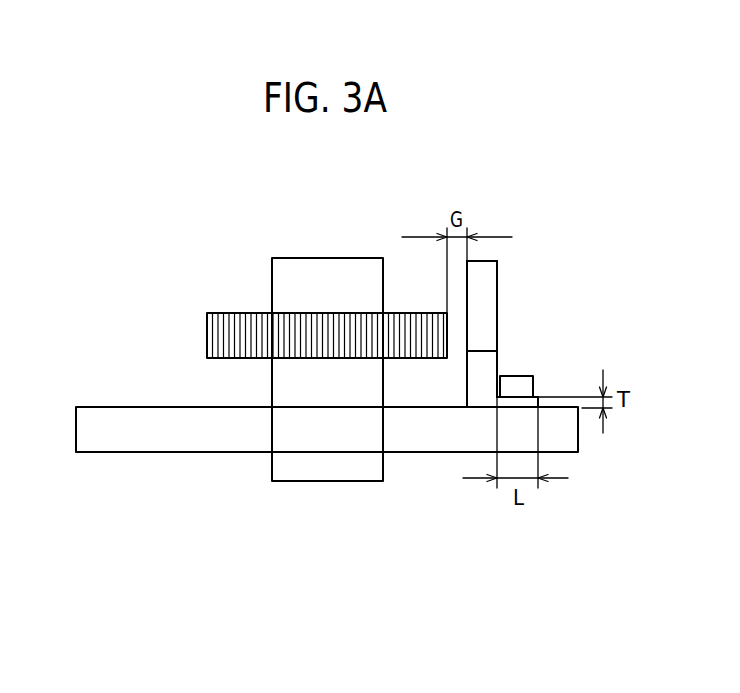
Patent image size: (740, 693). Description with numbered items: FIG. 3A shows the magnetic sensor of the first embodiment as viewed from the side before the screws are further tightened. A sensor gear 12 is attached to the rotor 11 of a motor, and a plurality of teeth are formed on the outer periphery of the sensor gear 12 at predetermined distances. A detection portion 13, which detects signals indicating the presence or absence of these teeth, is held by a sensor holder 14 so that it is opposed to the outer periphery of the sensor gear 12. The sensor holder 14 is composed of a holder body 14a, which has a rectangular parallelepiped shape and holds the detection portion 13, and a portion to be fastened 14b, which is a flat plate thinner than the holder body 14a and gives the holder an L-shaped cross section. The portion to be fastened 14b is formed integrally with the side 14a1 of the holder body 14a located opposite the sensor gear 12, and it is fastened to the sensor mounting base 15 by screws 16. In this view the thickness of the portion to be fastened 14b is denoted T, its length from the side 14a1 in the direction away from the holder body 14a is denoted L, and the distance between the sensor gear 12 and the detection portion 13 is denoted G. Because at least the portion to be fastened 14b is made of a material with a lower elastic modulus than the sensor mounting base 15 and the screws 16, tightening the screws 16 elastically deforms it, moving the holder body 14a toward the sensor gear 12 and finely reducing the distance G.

The rotor 11 is at (305, 270).
The sensor gear 12 is at (235, 318).
The detection portion 13 is at (487, 275).
The sensor holder 14 is at (463, 543).
The holder body 14a is at (478, 398).
The side of the holder body 14a1 is at (497, 359).
The portion to be fastened 14b is at (520, 402).
The sensor mounting base 15 is at (133, 420).
The screws 16 is at (520, 383).